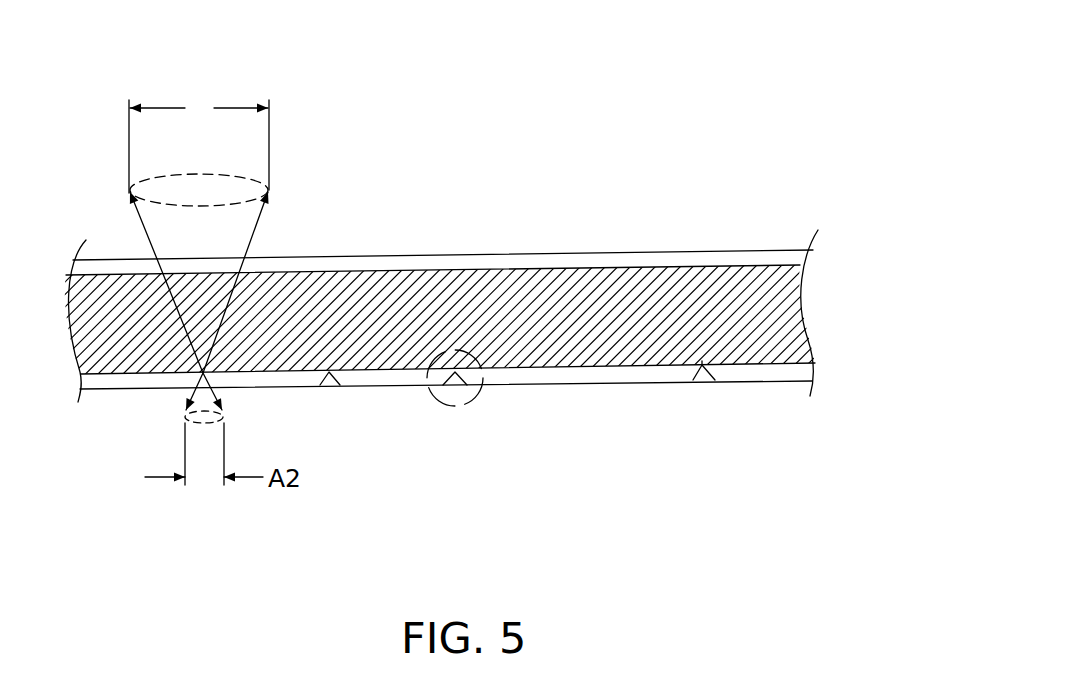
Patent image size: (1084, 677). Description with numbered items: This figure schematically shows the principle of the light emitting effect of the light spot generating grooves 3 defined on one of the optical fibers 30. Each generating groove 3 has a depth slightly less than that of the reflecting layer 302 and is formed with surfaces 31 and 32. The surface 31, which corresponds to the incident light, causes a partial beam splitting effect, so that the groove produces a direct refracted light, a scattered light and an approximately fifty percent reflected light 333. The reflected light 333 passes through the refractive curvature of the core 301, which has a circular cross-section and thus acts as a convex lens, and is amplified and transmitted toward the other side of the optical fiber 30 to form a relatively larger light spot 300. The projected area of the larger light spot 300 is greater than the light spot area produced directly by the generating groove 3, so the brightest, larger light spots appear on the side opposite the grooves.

The light spot generating groove 3 is at (181, 408).
The optical fiber 30 is at (473, 251).
The surface 31 is at (712, 380).
The surface 32 is at (692, 380).
The light spot 300 is at (215, 187).
The core 301 is at (780, 322).
The reflecting layer 302 is at (758, 370).
The reflected light 333 is at (250, 242).